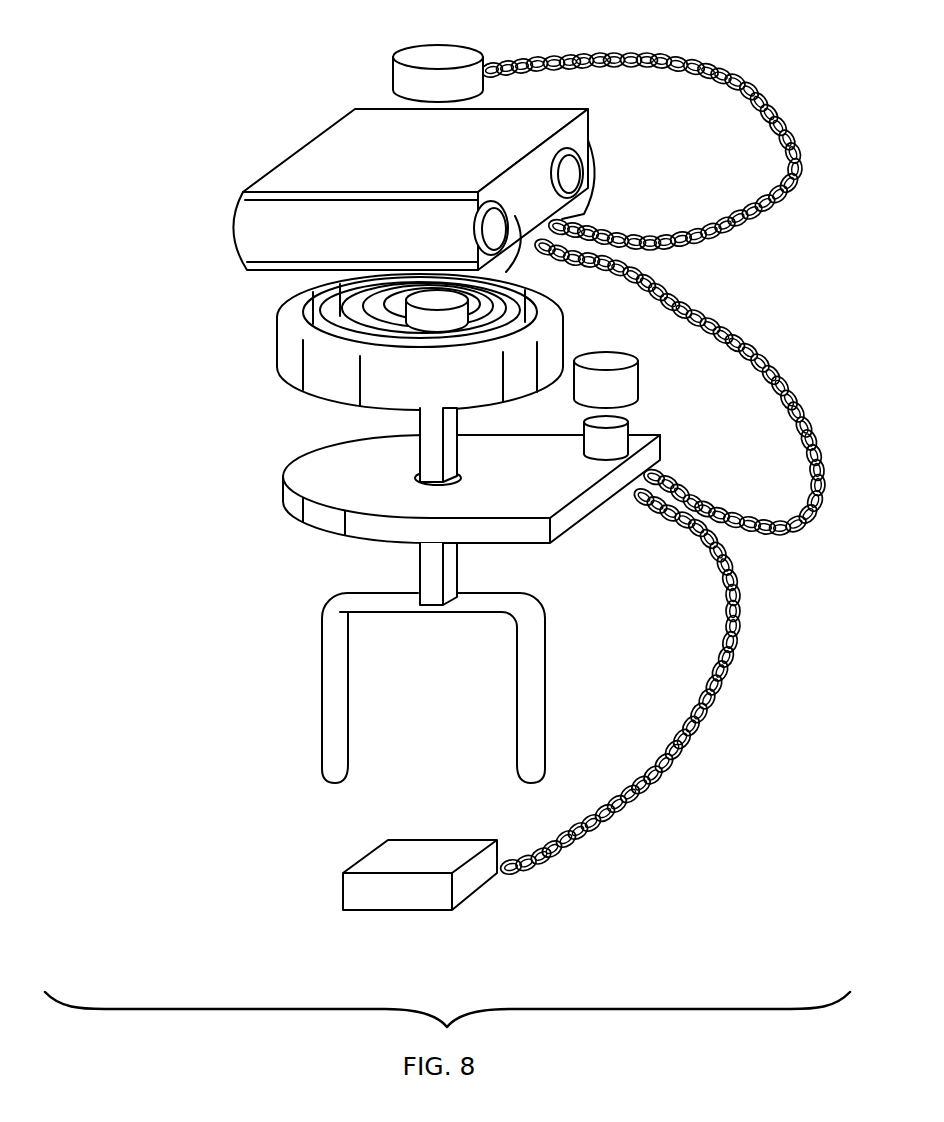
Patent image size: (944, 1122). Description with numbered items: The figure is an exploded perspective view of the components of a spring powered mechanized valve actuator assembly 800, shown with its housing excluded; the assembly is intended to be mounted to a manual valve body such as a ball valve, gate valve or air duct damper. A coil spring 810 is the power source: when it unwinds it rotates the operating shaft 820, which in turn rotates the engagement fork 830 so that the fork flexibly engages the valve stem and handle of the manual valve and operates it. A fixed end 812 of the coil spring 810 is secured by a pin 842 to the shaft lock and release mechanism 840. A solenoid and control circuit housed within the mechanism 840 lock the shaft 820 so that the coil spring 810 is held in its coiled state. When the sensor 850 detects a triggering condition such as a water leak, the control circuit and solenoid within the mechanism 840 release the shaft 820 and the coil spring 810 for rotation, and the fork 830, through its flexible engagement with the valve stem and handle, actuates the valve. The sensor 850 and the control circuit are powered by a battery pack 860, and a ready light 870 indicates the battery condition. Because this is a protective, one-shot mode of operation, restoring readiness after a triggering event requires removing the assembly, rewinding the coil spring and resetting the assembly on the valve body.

The mechanized valve actuator assembly 800 is at (719, 28).
The coil spring 810 is at (277, 342).
The fixed end 812 is at (637, 381).
The operating shaft 820 is at (417, 455).
The engagement fork 830 is at (330, 672).
The shaft lock and release mechanism 840 is at (350, 527).
The pin 842 is at (618, 442).
The sensor 850 is at (378, 860).
The battery pack 860 is at (237, 203).
The ready light 870 is at (403, 82).